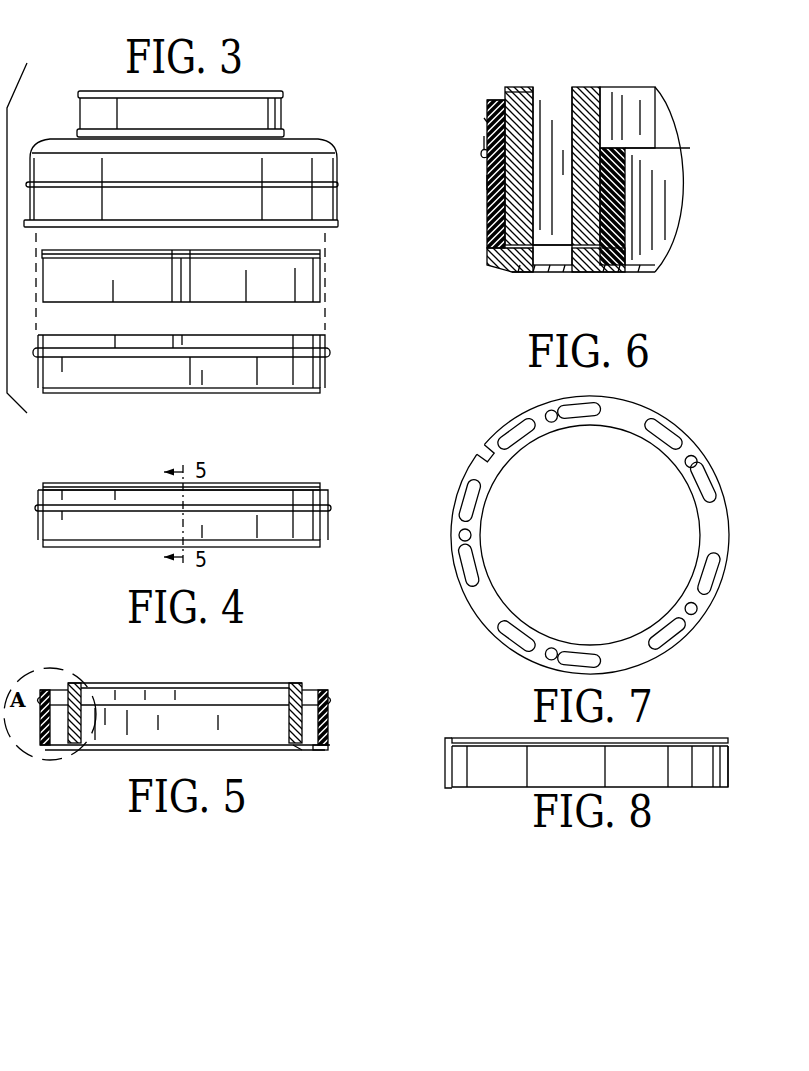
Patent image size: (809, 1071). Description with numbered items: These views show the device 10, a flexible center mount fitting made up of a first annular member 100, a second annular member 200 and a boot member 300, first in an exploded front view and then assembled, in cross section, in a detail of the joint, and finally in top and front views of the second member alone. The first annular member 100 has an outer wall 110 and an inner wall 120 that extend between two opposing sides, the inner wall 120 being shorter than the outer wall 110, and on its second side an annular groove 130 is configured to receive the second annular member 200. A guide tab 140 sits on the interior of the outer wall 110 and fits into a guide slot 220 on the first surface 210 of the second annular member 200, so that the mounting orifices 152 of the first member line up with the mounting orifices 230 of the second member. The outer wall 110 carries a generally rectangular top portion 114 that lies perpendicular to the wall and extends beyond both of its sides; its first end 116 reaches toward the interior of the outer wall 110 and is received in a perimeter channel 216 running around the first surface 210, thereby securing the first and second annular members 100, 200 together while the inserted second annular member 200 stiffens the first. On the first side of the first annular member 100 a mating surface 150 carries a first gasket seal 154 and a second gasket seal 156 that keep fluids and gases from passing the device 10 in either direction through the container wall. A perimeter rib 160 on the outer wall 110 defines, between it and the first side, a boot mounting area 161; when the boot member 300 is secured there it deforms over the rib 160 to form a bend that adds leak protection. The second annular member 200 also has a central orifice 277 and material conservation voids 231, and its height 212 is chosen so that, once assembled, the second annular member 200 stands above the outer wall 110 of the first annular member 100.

In FIG. 3, the device 10 is at (52, 84).
In FIG. 3, the first annular member 100 is at (334, 362).
In FIG. 4, the first annular member 100 is at (330, 521).
In FIG. 5, the first annular member 100 is at (338, 716).
In FIG. 6, the first annular member 100 is at (485, 215).
In FIG. 6, the outer wall 110 is at (484, 142).
In FIG. 6, the top portion 114 is at (482, 95).
In FIG. 6, the first end 116 is at (484, 120).
In FIG. 6, the inner wall 120 is at (627, 148).
In FIG. 6, the annular groove 130 is at (592, 163).
In FIG. 3, the guide tab 140 is at (182, 320).
In FIG. 5, the mating surface 150 is at (270, 750).
In FIG. 6, the mating surface 150 is at (508, 265).
In FIG. 6, the mounting orifices 152 is at (560, 258).
In FIG. 5, the first gasket seal 154 is at (313, 750).
In FIG. 6, the first gasket seal 154 is at (512, 276).
In FIG. 5, the second gasket seal 156 is at (293, 750).
In FIG. 6, the second gasket seal 156 is at (592, 275).
In FIG. 6, the perimeter rib 160 is at (481, 152).
In FIG. 6, the boot mounting area 161 is at (486, 182).
In FIG. 3, the second annular member 200 is at (324, 278).
In FIG. 4, the second annular member 200 is at (318, 480).
In FIG. 5, the second annular member 200 is at (320, 681).
In FIG. 6, the second annular member 200 is at (503, 84).
In FIG. 7, the second annular member 200 is at (667, 413).
In FIG. 8, the second annular member 200 is at (678, 732).
In FIG. 8, the first surface 210 is at (729, 778).
In FIG. 8, the height 212 is at (442, 763).
In FIG. 6, the perimeter channel 216 is at (511, 102).
In FIG. 8, the perimeter channel 216 is at (729, 742).
In FIG. 3, the guide slot 220 is at (181, 262).
In FIG. 7, the guide slot 220 is at (478, 448).
In FIG. 6, the mounting orifices 230 is at (550, 247).
In FIG. 7, the mounting orifices 230 is at (694, 455).
In FIG. 7, the voids 231 is at (706, 485).
In FIG. 7, the central orifice 277 is at (602, 541).
In FIG. 3, the boot member 300 is at (323, 134).